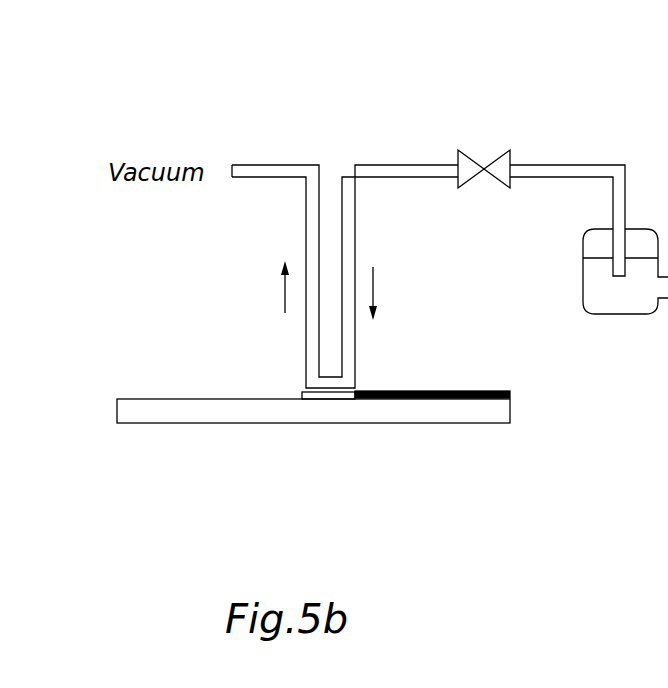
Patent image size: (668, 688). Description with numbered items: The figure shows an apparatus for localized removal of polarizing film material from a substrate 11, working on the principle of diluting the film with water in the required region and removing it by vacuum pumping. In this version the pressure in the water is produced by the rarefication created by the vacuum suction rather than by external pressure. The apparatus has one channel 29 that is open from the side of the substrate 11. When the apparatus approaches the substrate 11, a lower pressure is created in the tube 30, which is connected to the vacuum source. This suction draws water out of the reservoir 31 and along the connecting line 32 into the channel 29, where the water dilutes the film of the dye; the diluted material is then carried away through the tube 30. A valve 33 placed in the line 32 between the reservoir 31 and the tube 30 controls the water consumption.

The substrate 11 is at (124, 414).
The channel 29 is at (346, 385).
The tube 30 is at (273, 169).
The reservoir 31 is at (623, 300).
The supply pipe 32 is at (530, 172).
The valve 33 is at (486, 166).